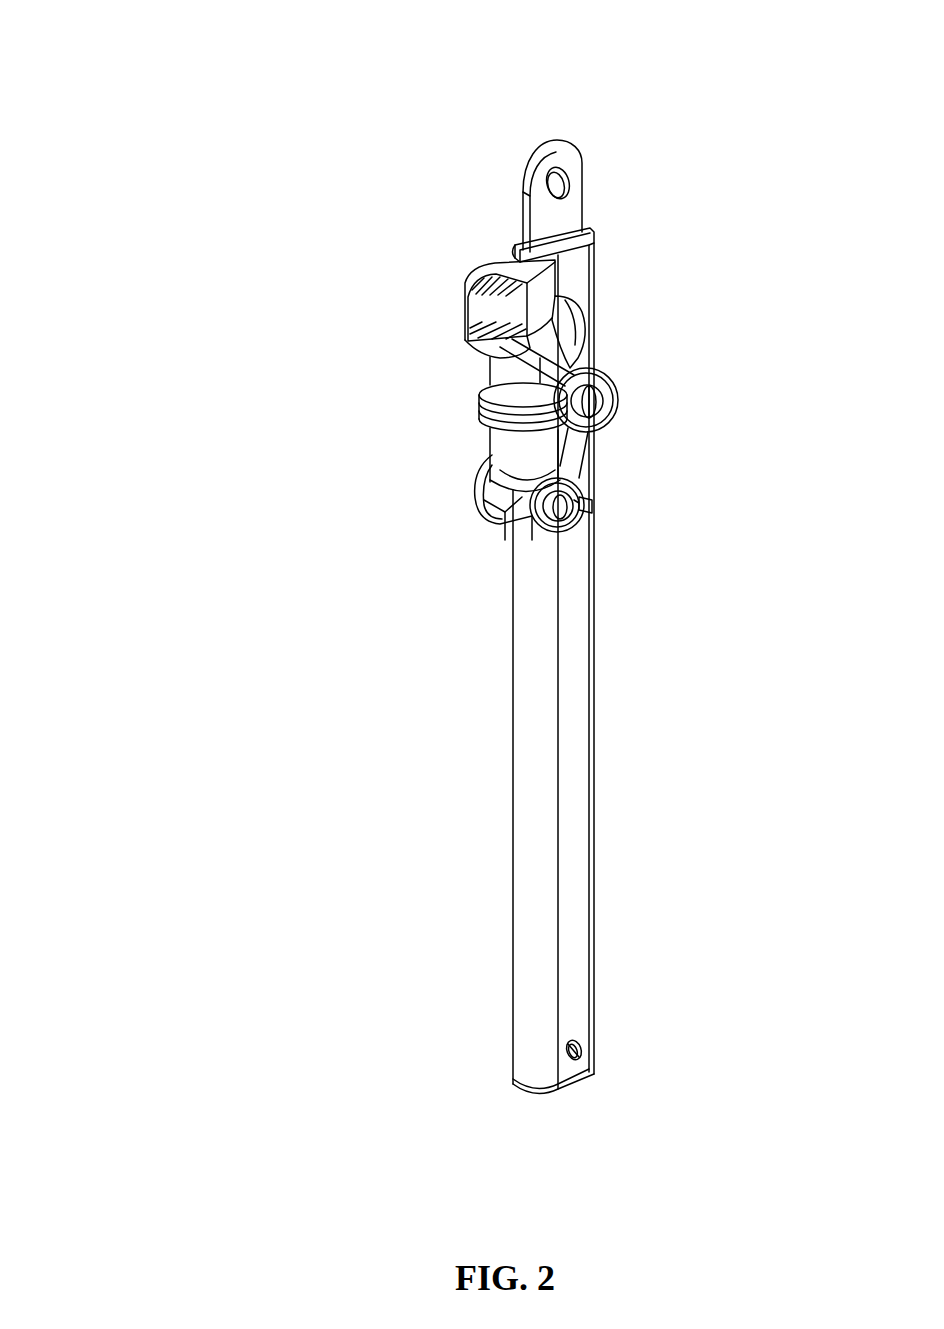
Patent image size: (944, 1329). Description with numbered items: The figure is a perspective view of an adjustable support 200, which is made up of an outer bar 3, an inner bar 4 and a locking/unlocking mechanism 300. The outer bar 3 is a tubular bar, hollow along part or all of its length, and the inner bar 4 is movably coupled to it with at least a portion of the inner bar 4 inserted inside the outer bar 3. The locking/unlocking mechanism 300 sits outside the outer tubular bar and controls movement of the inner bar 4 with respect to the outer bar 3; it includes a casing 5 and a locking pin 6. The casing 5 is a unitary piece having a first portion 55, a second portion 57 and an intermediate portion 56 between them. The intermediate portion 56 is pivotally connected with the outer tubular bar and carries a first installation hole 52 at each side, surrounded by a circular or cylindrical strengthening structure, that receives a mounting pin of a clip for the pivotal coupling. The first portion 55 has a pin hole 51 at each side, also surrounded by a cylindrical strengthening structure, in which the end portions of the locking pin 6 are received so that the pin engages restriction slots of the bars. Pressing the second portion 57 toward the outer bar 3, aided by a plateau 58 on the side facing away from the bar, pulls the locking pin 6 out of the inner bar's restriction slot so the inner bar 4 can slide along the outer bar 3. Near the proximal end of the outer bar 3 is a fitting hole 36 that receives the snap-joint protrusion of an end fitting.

The adjustable support 200 is at (252, 53).
The locking/unlocking mechanism 300 is at (478, 268).
The outer bar 3 is at (540, 876).
The inner bar 4 is at (555, 222).
The casing 5 is at (497, 447).
The locking pin 6 is at (587, 508).
The fitting hole 36 is at (522, 320).
The pin hole 51 is at (555, 526).
The first installation hole 52 is at (606, 372).
The first portion 55 is at (492, 512).
The intermediate portion 56 is at (483, 403).
The second portion 57 is at (470, 338).
The plateau 58 is at (470, 283).